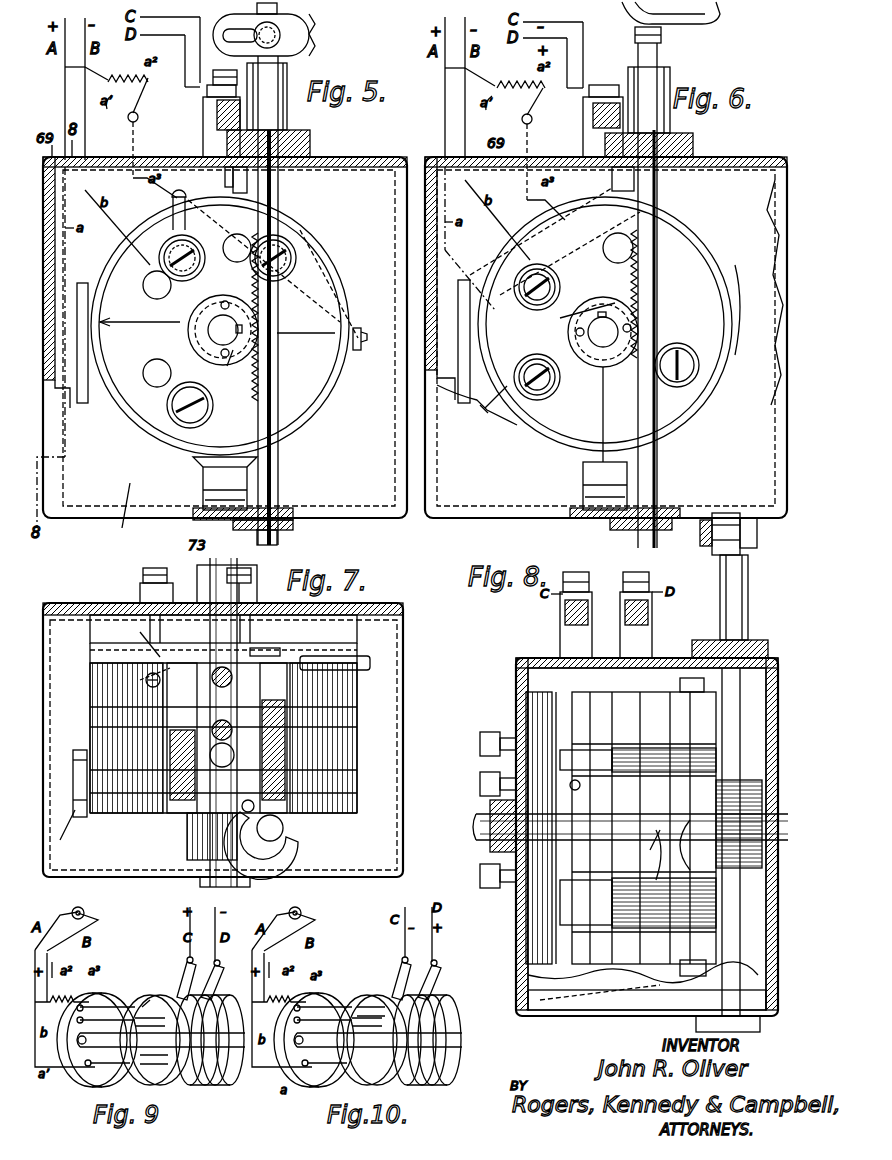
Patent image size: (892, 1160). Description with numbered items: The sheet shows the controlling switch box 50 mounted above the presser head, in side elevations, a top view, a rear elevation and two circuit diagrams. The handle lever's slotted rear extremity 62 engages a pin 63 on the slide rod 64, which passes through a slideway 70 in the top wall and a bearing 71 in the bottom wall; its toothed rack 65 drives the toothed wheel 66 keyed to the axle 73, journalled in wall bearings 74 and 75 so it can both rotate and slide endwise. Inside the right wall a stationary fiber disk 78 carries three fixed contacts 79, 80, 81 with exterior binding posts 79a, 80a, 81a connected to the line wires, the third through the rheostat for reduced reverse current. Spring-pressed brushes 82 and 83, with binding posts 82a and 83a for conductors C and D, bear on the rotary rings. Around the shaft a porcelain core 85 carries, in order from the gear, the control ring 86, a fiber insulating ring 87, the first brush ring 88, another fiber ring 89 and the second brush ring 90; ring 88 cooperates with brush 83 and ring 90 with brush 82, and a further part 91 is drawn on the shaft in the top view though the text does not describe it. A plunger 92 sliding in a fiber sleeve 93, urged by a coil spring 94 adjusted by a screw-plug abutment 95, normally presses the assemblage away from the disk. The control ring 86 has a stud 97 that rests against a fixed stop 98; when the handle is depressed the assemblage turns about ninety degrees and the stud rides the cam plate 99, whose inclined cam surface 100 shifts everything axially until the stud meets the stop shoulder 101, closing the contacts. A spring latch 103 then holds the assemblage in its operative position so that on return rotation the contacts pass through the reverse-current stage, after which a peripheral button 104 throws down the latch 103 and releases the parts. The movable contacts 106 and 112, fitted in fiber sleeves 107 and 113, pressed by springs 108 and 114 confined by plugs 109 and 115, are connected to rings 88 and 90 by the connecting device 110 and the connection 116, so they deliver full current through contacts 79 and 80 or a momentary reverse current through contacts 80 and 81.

In FIG. 5, the switch box 50 is at (225, 337).
In FIG. 6, the switch box 50 is at (606, 337).
In FIG. 7, the switch box 50 is at (223, 740).
In FIG. 8, the switch box 50 is at (647, 837).
In FIG. 5, the slotted rear extremity 62 is at (313, 33).
In FIG. 6, the slotted rear extremity 62 is at (718, 13).
In FIG. 8, the slotted rear extremity 62 is at (745, 520).
In FIG. 5, the pin 63 is at (282, 60).
In FIG. 6, the pin 63 is at (664, 30).
In FIG. 8, the pin 63 is at (757, 535).
In FIG. 5, the slide rod 64 is at (300, 138).
In FIG. 6, the slide rod 64 is at (660, 52).
In FIG. 7, the slide rod 64 is at (283, 838).
In FIG. 8, the slide rod 64 is at (742, 710).
In FIG. 5, the toothed rack 65 is at (262, 372).
In FIG. 6, the toothed rack 65 is at (658, 268).
In FIG. 5, the toothed wheel 66 is at (230, 367).
In FIG. 6, the toothed wheel 66 is at (575, 316).
In FIG. 7, the toothed wheel 66 is at (187, 845).
In FIG. 8, the toothed wheel 66 is at (740, 790).
In FIG. 5, the slideway 70 is at (290, 117).
In FIG. 6, the slideway 70 is at (672, 120).
In FIG. 7, the slideway 70 is at (290, 858).
In FIG. 5, the bearing 71 is at (285, 533).
In FIG. 5, the axle 73 is at (223, 330).
In FIG. 6, the axle 73 is at (603, 332).
In FIG. 7, the axle 73 is at (211, 713).
In FIG. 8, the axle 73 is at (478, 835).
In FIG. 9, the axle 73 is at (159, 1049).
In FIG. 10, the axle 73 is at (377, 1049).
In FIG. 7, the wall bearing 74 is at (257, 570).
In FIG. 8, the wall bearing 74 is at (490, 805).
In FIG. 7, the wall bearing 75 is at (250, 884).
In FIG. 7, the stationary disk 78 is at (126, 716).
In FIG. 8, the stationary disk 78 is at (539, 828).
In FIG. 9, the stationary disk 78 is at (108, 995).
In FIG. 10, the stationary disk 78 is at (325, 995).
In FIG. 5, the fixed contact 79 is at (143, 370).
In FIG. 8, the fixed contact 79 is at (560, 880).
In FIG. 9, the fixed contact 79 is at (115, 1079).
In FIG. 10, the fixed contact 79 is at (332, 1078).
In FIG. 8, the binding post 79a is at (484, 876).
In FIG. 5, the fixed contact 80 is at (143, 283).
In FIG. 6, the fixed contact 80 is at (618, 259).
In FIG. 7, the fixed contact 80 is at (162, 624).
In FIG. 8, the fixed contact 80 is at (540, 803).
In FIG. 9, the fixed contact 80 is at (150, 1015).
In FIG. 10, the fixed contact 80 is at (368, 1015).
In FIG. 7, the binding post 80a is at (143, 578).
In FIG. 8, the binding post 80a is at (484, 782).
In FIG. 5, the fixed contact 81 is at (237, 234).
In FIG. 7, the fixed contact 81 is at (252, 624).
In FIG. 8, the fixed contact 81 is at (556, 745).
In FIG. 9, the fixed contact 81 is at (138, 998).
In FIG. 10, the fixed contact 81 is at (354, 998).
In FIG. 7, the binding post 81a is at (257, 590).
In FIG. 8, the binding post 81a is at (484, 740).
In FIG. 7, the brush 82 is at (230, 684).
In FIG. 8, the brush 82 is at (572, 658).
In FIG. 9, the brush 82 is at (182, 973).
In FIG. 10, the brush 82 is at (398, 960).
In FIG. 8, the binding post 82a is at (590, 580).
In FIG. 5, the brush 83 is at (206, 145).
In FIG. 6, the brush 83 is at (591, 108).
In FIG. 7, the brush 83 is at (233, 730).
In FIG. 8, the brush 83 is at (632, 658).
In FIG. 9, the brush 83 is at (212, 975).
In FIG. 10, the brush 83 is at (430, 972).
In FIG. 5, the binding post 83a is at (210, 94).
In FIG. 8, the binding post 83a is at (652, 580).
In FIG. 7, the porcelain core 85 is at (265, 643).
In FIG. 8, the porcelain core 85 is at (587, 786).
In FIG. 5, the control ring 86 is at (305, 232).
In FIG. 6, the control ring 86 is at (690, 243).
In FIG. 7, the control ring 86 is at (330, 790).
In FIG. 8, the control ring 86 is at (644, 828).
In FIG. 9, the control ring 86 is at (225, 1068).
In FIG. 10, the control ring 86 is at (445, 1018).
In FIG. 7, the fiber insulating ring 87 is at (330, 770).
In FIG. 8, the fiber insulating ring 87 is at (640, 807).
In FIG. 7, the first brush ring 88 is at (330, 750).
In FIG. 8, the first brush ring 88 is at (670, 780).
In FIG. 9, the first brush ring 88 is at (215, 1075).
In FIG. 10, the first brush ring 88 is at (440, 1058).
In FIG. 7, the fiber ring 89 is at (330, 710).
In FIG. 8, the fiber ring 89 is at (620, 810).
In FIG. 7, the second brush ring 90 is at (330, 680).
In FIG. 8, the second brush ring 90 is at (593, 802).
In FIG. 9, the second brush ring 90 is at (200, 1072).
In FIG. 10, the second brush ring 90 is at (427, 1065).
In FIG. 7, the collar 91 is at (222, 755).
In FIG. 7, the plunger 92 is at (141, 636).
In FIG. 8, the plunger 92 is at (560, 900).
In FIG. 8, the fiber sleeve 93 is at (586, 891).
In FIG. 8, the coil spring 94 is at (644, 878).
In FIG. 5, the abutment 95 is at (206, 415).
In FIG. 6, the abutment 95 is at (690, 355).
In FIG. 8, the abutment 95 is at (716, 895).
In FIG. 5, the stud 97 is at (224, 176).
In FIG. 6, the stud 97 is at (453, 341).
In FIG. 7, the stud 97 is at (62, 825).
In FIG. 8, the stud 97 is at (690, 668).
In FIG. 5, the fixed stop 98 is at (250, 178).
In FIG. 6, the fixed stop 98 is at (640, 183).
In FIG. 8, the fixed stop 98 is at (680, 685).
In FIG. 5, the cam plate 99 is at (84, 404).
In FIG. 6, the cam plate 99 is at (466, 400).
In FIG. 7, the cam plate 99 is at (78, 750).
In FIG. 8, the cam plate 99 is at (690, 820).
In FIG. 8, the inclined cam surface 100 is at (681, 842).
In FIG. 8, the stop shoulder 101 is at (691, 862).
In FIG. 5, the spring latch 103 is at (220, 490).
In FIG. 6, the spring latch 103 is at (590, 480).
In FIG. 8, the spring latch 103 is at (647, 986).
In FIG. 5, the button 104 is at (220, 472).
In FIG. 6, the button 104 is at (740, 370).
In FIG. 8, the button 104 is at (693, 956).
In FIG. 5, the movable contact 106 is at (286, 258).
In FIG. 6, the movable contact 106 is at (522, 300).
In FIG. 7, the movable contact 106 is at (295, 637).
In FIG. 9, the movable contact 106 is at (161, 1047).
In FIG. 10, the movable contact 106 is at (368, 998).
In FIG. 7, the fiber sleeve 107 is at (282, 700).
In FIG. 7, the spring 108 is at (282, 745).
In FIG. 5, the plug 109 is at (296, 262).
In FIG. 7, the plug 109 is at (262, 815).
In FIG. 5, the connecting device 110 is at (365, 326).
In FIG. 6, the connecting device 110 is at (555, 241).
In FIG. 7, the connecting device 110 is at (360, 658).
In FIG. 5, the movable contact 112 is at (168, 250).
In FIG. 6, the movable contact 112 is at (520, 372).
In FIG. 7, the movable contact 112 is at (161, 738).
In FIG. 8, the movable contact 112 is at (589, 716).
In FIG. 9, the movable contact 112 is at (125, 1046).
In FIG. 10, the movable contact 112 is at (352, 1027).
In FIG. 7, the fiber sleeve 113 is at (165, 690).
In FIG. 8, the fiber sleeve 113 is at (582, 750).
In FIG. 7, the spring 114 is at (170, 735).
In FIG. 8, the spring 114 is at (650, 748).
In FIG. 5, the plug 115 is at (204, 262).
In FIG. 7, the plug 115 is at (180, 805).
In FIG. 8, the plug 115 is at (690, 758).
In FIG. 5, the connection 116 is at (170, 198).
In FIG. 6, the connection 116 is at (512, 396).
In FIG. 7, the connection 116 is at (135, 680).
In FIG. 8, the connection 116 is at (556, 692).